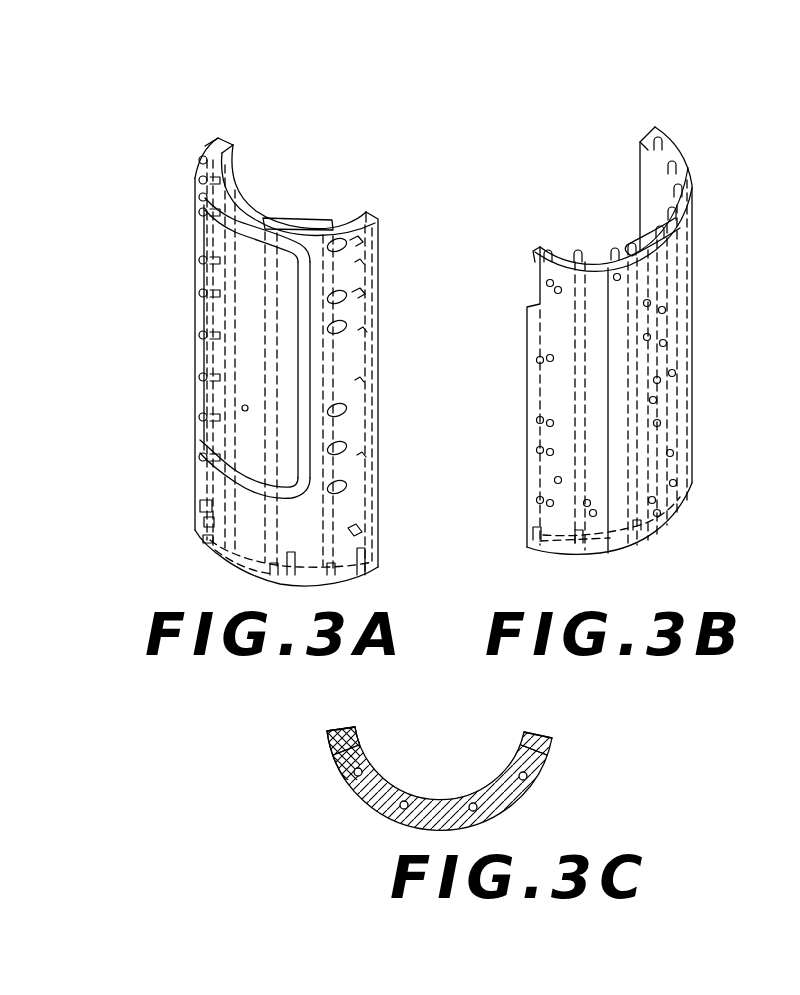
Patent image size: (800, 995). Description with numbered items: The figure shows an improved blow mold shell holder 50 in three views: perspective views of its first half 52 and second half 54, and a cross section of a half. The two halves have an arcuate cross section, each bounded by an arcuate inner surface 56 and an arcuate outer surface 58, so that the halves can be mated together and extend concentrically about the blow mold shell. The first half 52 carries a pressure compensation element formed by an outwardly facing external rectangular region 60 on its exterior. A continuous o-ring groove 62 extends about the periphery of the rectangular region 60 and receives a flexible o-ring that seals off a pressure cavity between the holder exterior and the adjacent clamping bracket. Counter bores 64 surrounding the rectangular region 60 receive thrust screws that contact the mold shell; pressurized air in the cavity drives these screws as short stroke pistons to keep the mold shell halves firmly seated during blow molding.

In FIG. 3B, the blow mold shell holder 50 is at (562, 123).
In FIG. 3A, the first half 52 is at (380, 362).
In FIG. 3B, the second half 54 is at (643, 462).
In FIG. 3C, the second half 54 is at (510, 793).
In FIG. 3C, the arcuate inner surface 56 is at (390, 780).
In FIG. 3C, the arcuate outer surface 58 is at (365, 802).
In FIG. 3A, the external rectangular region 60 is at (258, 321).
In FIG. 3A, the o-ring groove 62 is at (206, 528).
In FIG. 3A, the counter bores 64 is at (242, 410).